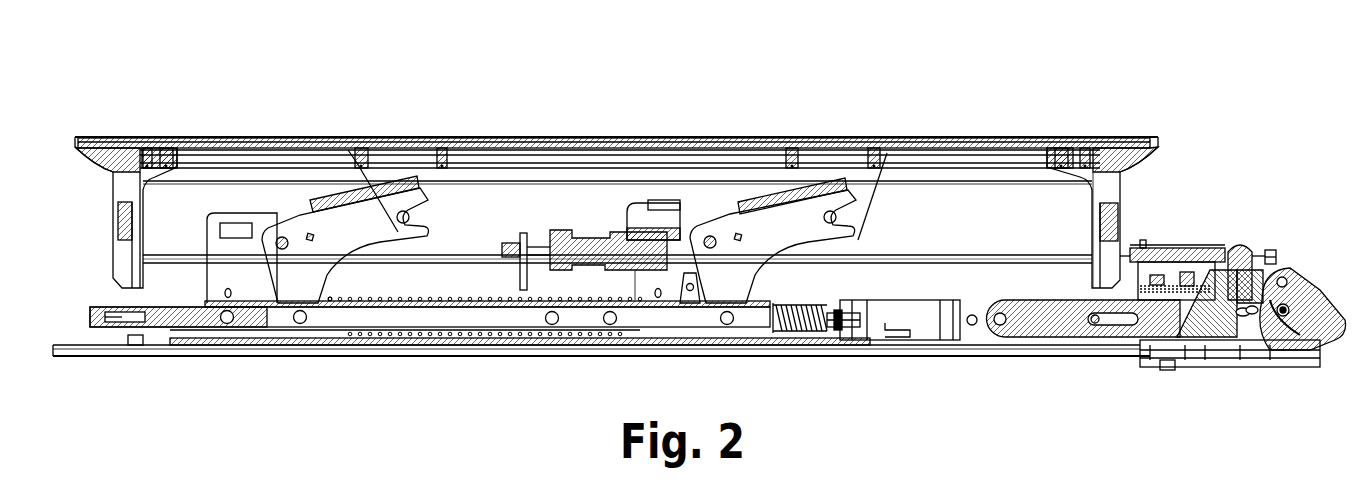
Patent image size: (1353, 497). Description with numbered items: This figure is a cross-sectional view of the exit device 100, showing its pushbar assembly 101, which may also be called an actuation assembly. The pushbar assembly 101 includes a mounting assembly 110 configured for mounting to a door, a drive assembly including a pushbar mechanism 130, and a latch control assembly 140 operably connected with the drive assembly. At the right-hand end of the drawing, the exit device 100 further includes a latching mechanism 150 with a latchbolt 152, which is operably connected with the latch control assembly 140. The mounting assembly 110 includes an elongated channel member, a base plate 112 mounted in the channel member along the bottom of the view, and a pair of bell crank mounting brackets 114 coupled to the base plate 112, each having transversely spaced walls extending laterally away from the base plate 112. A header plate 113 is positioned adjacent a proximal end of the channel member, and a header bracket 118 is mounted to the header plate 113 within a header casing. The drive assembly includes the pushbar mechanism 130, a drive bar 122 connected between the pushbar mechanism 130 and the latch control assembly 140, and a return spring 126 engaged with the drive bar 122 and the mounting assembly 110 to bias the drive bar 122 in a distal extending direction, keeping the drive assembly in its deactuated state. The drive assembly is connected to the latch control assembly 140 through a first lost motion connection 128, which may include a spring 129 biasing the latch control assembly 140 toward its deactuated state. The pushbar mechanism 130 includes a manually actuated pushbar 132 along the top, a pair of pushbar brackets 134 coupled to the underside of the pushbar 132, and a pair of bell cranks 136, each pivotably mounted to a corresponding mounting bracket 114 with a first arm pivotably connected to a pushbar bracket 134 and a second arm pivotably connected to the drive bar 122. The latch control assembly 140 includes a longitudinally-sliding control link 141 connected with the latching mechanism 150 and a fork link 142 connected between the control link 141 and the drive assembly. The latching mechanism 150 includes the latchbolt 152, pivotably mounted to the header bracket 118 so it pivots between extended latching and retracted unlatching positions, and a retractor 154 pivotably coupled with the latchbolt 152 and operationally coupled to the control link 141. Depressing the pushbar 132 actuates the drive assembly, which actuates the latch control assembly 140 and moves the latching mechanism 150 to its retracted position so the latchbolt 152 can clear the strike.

The exit device 100 is at (305, 95).
The pushbar assembly 101 is at (396, 100).
The mounting assembly 110 is at (601, 406).
The base plate 112 is at (130, 398).
The header plate 113 is at (1222, 245).
The bell crank mounting bracket 114 is at (210, 295).
The header bracket 118 is at (1168, 250).
The drive bar 122 is at (370, 320).
The return spring 126 is at (443, 338).
The first lost motion connection 128 is at (800, 335).
The spring 129 is at (820, 335).
The pushbar mechanism 130 is at (130, 120).
The pushbar 132 is at (222, 137).
The pushbar bracket 134 is at (440, 205).
The bell crank 136 is at (325, 228).
The latch control assembly 140 is at (990, 245).
The control link 141 is at (1068, 320).
The fork link 142 is at (935, 320).
The latching mechanism 150 is at (1243, 259).
The latchbolt 152 is at (1300, 325).
The retractor 154 is at (1255, 250).